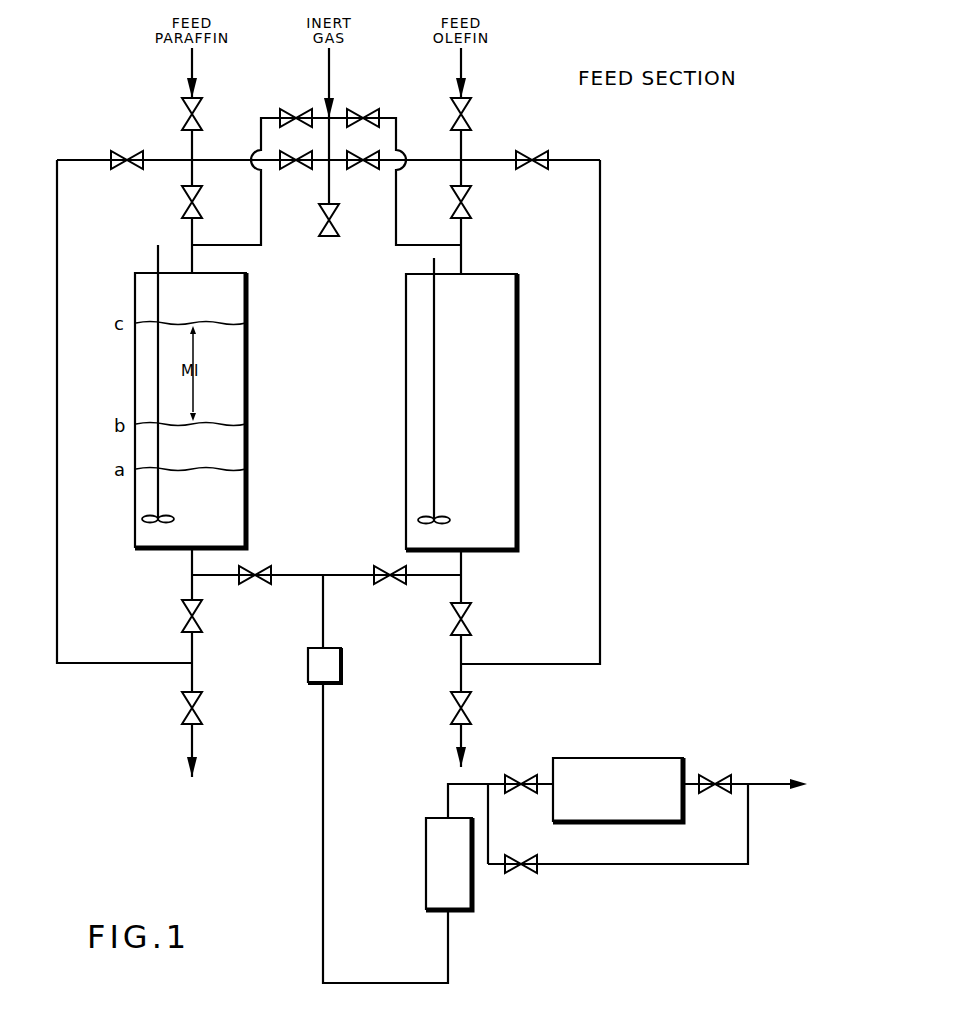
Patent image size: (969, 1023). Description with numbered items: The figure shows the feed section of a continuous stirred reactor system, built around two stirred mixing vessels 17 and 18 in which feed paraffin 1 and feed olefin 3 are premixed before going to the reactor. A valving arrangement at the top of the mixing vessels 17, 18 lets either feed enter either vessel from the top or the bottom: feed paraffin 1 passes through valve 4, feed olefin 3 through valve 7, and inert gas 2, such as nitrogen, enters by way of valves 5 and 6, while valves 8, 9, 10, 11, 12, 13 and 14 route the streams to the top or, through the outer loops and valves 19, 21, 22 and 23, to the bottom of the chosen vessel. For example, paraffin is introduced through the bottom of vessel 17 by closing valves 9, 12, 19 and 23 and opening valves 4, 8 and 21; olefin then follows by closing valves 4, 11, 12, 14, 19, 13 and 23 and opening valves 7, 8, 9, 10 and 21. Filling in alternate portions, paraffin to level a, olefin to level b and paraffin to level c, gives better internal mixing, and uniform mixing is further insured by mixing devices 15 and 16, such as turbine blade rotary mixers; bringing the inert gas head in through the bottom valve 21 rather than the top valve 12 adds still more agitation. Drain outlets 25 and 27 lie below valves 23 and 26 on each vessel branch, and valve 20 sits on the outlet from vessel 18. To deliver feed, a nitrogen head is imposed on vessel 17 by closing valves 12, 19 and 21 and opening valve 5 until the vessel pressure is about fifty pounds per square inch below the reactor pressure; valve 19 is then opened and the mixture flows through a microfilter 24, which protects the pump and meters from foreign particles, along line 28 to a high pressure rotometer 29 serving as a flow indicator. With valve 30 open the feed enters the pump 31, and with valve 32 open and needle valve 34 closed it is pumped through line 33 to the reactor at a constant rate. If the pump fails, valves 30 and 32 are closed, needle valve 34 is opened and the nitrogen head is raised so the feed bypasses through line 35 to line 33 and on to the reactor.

The feed paraffin 1 is at (192, 66).
The inert gas 2 is at (330, 94).
The feed olefin 3 is at (464, 70).
The valve 4 is at (197, 121).
The valve 5 is at (291, 112).
The inert gas valve 6 is at (366, 110).
The valve 7 is at (473, 122).
The valve 8 is at (128, 170).
The valve 9 is at (296, 170).
The valve 10 is at (358, 170).
The valve 11 is at (528, 171).
The valve 12 is at (196, 210).
The valve 13 is at (334, 226).
The valve 14 is at (465, 213).
The mixing device 15 is at (158, 256).
The mixing device 16 is at (432, 321).
The mixing vessel 17 is at (248, 355).
The mixing vessel 18 is at (519, 405).
The valve 19 is at (261, 570).
The valve 20 is at (394, 568).
The valve 21 is at (195, 624).
The valve 22 is at (464, 626).
The valve 23 is at (196, 713).
The microfilter 24 is at (346, 663).
The drain outlet 25 is at (192, 745).
The valve 26 is at (464, 713).
The drain outlet 27 is at (457, 736).
The feed conduit 28 is at (320, 843).
The high pressure rotometer 29 is at (424, 863).
The valve 30 is at (524, 781).
The pump 31 is at (617, 758).
The valve 32 is at (708, 780).
The line 33 is at (765, 784).
The needle valve 34 is at (511, 870).
The line 35 is at (658, 865).